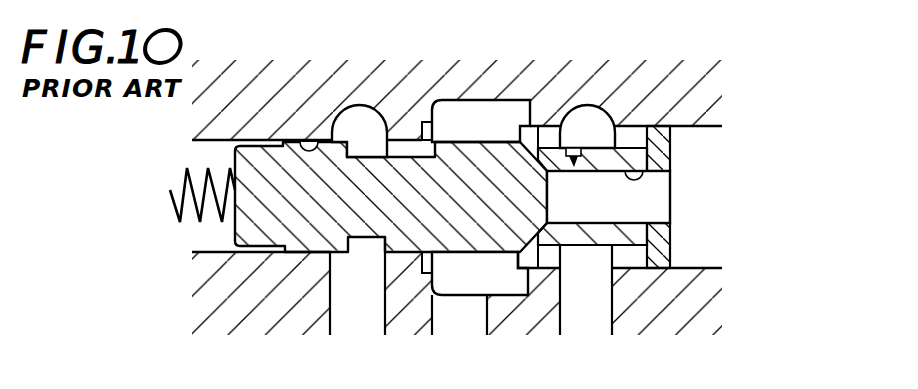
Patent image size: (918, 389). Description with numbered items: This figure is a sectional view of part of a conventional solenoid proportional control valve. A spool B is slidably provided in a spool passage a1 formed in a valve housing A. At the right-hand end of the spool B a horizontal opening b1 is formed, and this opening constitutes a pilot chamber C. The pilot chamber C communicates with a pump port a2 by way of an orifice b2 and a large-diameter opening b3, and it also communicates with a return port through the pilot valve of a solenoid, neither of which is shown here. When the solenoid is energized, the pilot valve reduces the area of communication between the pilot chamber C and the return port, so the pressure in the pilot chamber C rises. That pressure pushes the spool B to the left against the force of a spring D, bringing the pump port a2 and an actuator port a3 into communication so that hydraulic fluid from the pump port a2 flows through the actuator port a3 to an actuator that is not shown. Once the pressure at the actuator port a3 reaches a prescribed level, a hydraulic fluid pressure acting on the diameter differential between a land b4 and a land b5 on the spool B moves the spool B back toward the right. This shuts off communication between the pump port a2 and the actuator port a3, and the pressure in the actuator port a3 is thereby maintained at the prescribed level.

The valve housing A is at (271, 116).
The spool B is at (300, 256).
The pilot chamber C is at (616, 211).
The spring D is at (184, 183).
The spool passage a1 is at (313, 140).
The pump port a2 is at (595, 316).
The actuator port a3 is at (468, 316).
The horizontal opening b1 is at (645, 170).
The orifice b2 is at (579, 146).
The large-diameter opening b3 is at (570, 148).
The land b4 is at (517, 254).
The land b5 is at (459, 256).